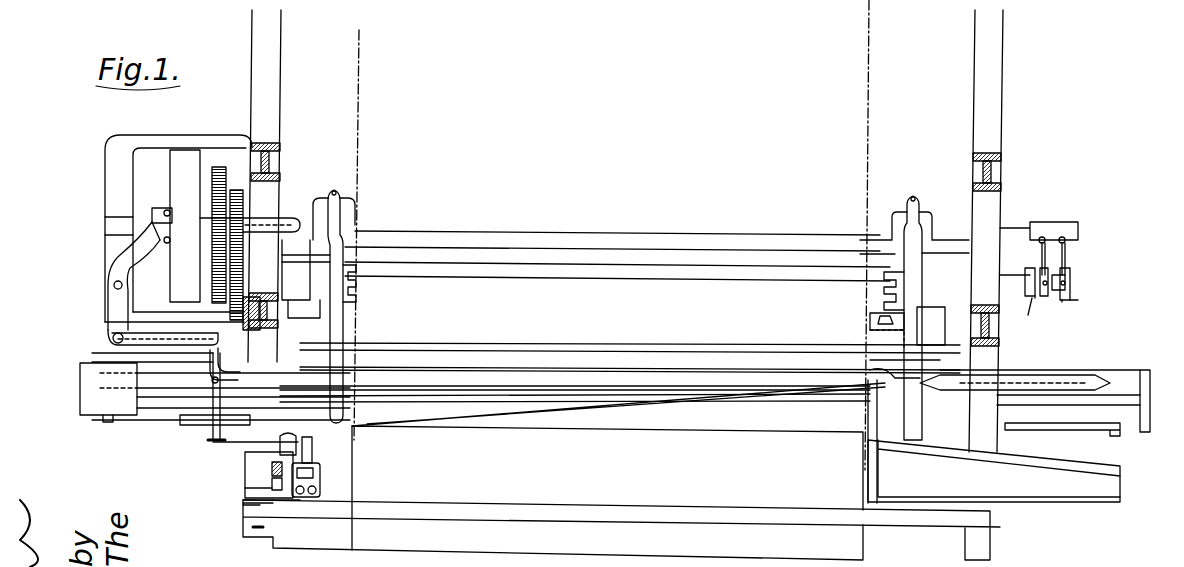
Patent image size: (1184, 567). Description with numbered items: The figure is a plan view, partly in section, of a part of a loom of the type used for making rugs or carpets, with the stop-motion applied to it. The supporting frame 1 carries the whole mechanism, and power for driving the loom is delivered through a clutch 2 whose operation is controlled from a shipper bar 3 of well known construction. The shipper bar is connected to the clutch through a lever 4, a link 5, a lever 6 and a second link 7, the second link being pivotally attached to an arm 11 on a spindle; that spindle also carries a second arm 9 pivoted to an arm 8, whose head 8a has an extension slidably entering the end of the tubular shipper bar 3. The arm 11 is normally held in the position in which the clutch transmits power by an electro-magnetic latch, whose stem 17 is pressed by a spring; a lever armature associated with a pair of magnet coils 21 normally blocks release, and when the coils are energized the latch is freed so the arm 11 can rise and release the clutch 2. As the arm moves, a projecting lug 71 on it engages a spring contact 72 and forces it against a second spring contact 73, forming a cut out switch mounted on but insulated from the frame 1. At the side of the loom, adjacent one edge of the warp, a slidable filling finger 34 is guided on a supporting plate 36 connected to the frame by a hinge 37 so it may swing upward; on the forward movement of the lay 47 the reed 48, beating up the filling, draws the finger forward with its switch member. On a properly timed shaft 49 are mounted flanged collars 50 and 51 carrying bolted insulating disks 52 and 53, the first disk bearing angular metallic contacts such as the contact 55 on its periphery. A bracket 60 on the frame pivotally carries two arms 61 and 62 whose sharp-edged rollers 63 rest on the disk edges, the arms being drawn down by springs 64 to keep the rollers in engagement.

The supporting frame 1 is at (252, 107).
The clutch 2 is at (178, 176).
The shipper bar 3 is at (615, 512).
The lever 4 is at (108, 274).
The link 5 is at (178, 335).
The lever 6 is at (213, 428).
The second link 7 is at (240, 444).
The arm 8 is at (243, 505).
The head 8a is at (258, 508).
The second arm 9 is at (243, 499).
The arm 11 is at (247, 457).
The stem 17 is at (297, 437).
The magnet coils 21 is at (287, 508).
The filling finger 34 is at (880, 383).
The supporting plate 36 is at (870, 340).
The hinge 37 is at (870, 318).
The lay 47 is at (592, 368).
The reed 48 is at (506, 343).
The shaft 49 is at (662, 277).
The flanged collar 50 is at (1028, 294).
The flanged collar 51 is at (1062, 300).
The insulating disk 52 is at (1040, 302).
The insulating disk 53 is at (1072, 301).
The metallic contact 55 is at (334, 420).
The bracket 60 is at (1024, 235).
The arm 61 is at (1066, 258).
The arm 62 is at (1040, 259).
The rollers 63 is at (1025, 281).
The springs 64 is at (1040, 247).
The projecting lug 71 is at (272, 487).
The spring contact 72 is at (272, 474).
The second spring contact 73 is at (245, 487).